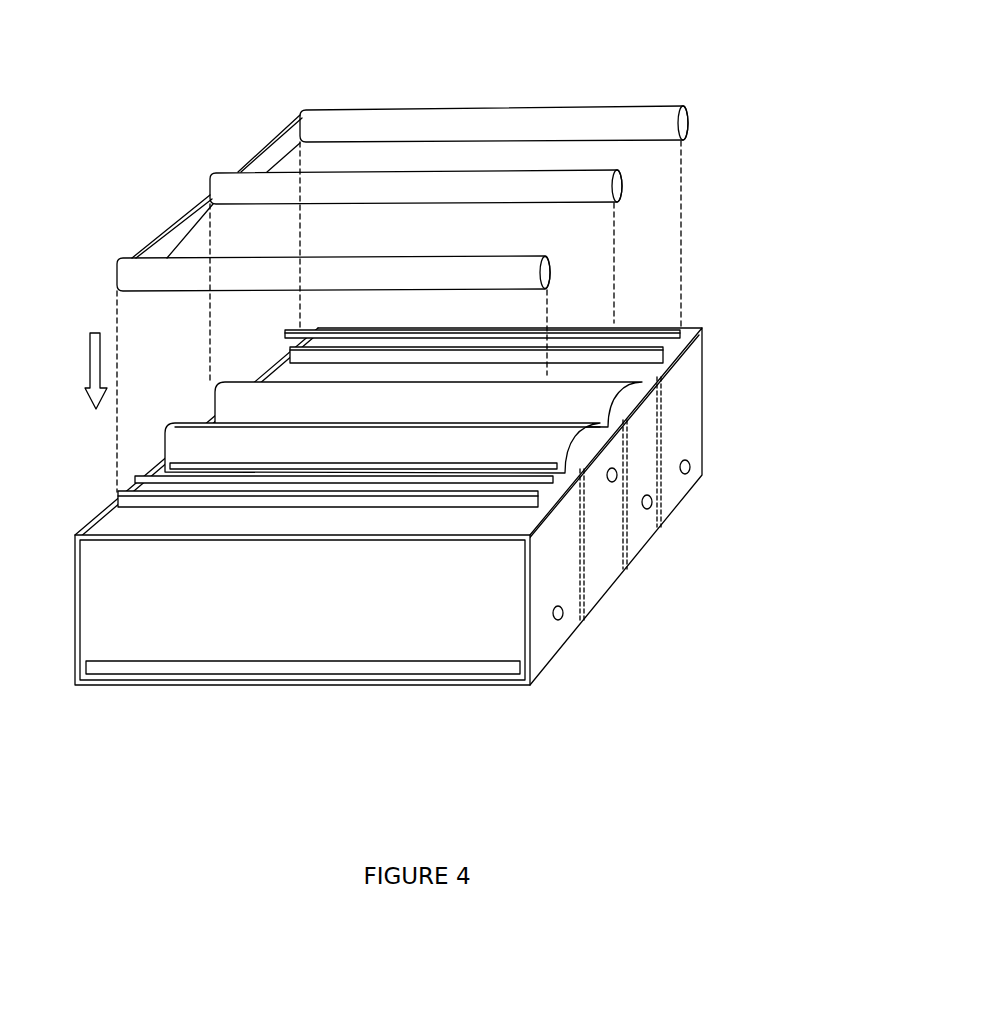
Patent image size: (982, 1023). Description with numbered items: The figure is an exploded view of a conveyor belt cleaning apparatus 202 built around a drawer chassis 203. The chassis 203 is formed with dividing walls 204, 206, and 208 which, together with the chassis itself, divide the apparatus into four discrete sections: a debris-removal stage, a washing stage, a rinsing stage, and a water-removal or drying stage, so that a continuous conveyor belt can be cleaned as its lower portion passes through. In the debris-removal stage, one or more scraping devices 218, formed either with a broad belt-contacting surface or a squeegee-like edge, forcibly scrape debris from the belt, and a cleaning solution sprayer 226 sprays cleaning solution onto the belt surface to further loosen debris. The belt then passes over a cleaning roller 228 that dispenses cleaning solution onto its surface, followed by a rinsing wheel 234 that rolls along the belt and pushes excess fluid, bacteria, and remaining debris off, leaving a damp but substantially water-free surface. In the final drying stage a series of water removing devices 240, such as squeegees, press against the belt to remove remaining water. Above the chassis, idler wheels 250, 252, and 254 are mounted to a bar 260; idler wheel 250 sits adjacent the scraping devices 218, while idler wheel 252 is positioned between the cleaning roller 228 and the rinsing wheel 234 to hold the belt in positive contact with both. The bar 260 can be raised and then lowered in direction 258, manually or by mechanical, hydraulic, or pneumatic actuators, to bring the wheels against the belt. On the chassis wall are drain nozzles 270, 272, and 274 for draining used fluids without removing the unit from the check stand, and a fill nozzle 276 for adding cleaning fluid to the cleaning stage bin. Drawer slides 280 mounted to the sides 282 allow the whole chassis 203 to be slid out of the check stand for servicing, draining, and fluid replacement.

The conveyor belt cleaning apparatus 202 is at (600, 718).
The drawer chassis 203 is at (68, 684).
The dividing wall 204 is at (583, 567).
The dividing wall 206 is at (628, 527).
The dividing wall 208 is at (662, 483).
The scraping device 218 is at (362, 500).
The cleaning solution sprayer 226 is at (203, 472).
The cleaning roller 228 is at (227, 450).
The rinsing wheel 234 is at (570, 405).
The water removing device 240 is at (580, 342).
The idler wheel 250 is at (170, 278).
The idler wheel 252 is at (267, 193).
The idler wheel 254 is at (363, 130).
The lowering direction 258 is at (96, 367).
The bar 260 is at (188, 222).
The drain nozzle 270 is at (562, 620).
The drain nozzle 272 is at (651, 508).
The drain nozzle 274 is at (689, 472).
The fill nozzle 276 is at (613, 483).
The drawer slide 280 is at (133, 675).
The side 282 is at (248, 620).